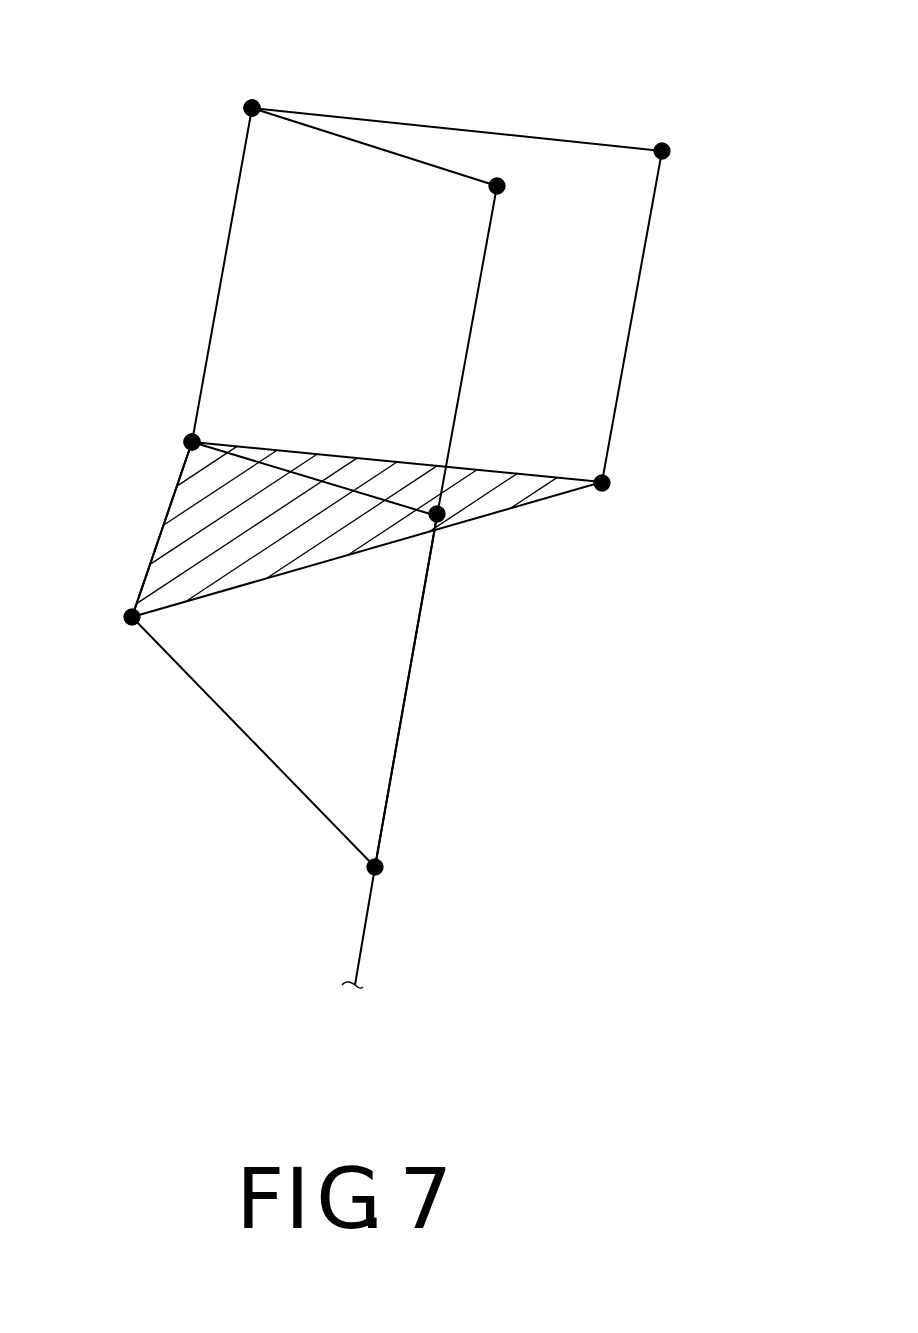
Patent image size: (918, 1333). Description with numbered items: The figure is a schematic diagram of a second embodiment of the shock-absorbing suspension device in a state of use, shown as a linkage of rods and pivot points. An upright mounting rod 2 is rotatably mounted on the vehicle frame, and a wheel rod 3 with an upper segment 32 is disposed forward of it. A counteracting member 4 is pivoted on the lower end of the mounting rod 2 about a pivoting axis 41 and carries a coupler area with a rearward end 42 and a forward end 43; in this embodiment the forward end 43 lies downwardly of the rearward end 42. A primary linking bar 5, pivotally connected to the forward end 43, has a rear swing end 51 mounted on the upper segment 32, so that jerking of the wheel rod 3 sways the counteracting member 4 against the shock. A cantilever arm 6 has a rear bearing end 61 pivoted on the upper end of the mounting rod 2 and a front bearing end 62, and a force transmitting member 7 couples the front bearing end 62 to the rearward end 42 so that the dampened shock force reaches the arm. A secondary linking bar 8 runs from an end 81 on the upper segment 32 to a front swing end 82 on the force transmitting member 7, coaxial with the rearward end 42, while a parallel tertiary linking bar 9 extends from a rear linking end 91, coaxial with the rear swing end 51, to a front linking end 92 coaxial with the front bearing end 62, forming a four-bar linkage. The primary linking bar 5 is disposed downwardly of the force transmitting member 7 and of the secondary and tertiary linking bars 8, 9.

The mounting rod 2 is at (644, 312).
The wheel rod 3 is at (410, 733).
The counteracting member 4 is at (160, 505).
The primary linking bar 5 is at (242, 750).
The cantilever arm 6 is at (458, 120).
The force transmitting member 7 is at (222, 214).
The secondary linking bar 8 is at (340, 478).
The tertiary linking bar 9 is at (365, 161).
The upper segment 32 is at (415, 645).
The pivoting axis 41 is at (608, 488).
The rearward end 42 is at (186, 438).
The forward end 43 is at (130, 624).
The rear swing end 51 is at (382, 865).
The rear bearing end 61 is at (668, 149).
The front bearing end 62 is at (252, 108).
The secondary linking bar end 81 is at (443, 518).
The front swing end 82 is at (192, 442).
The rear linking end 91 is at (503, 189).
The front linking end 92 is at (248, 100).